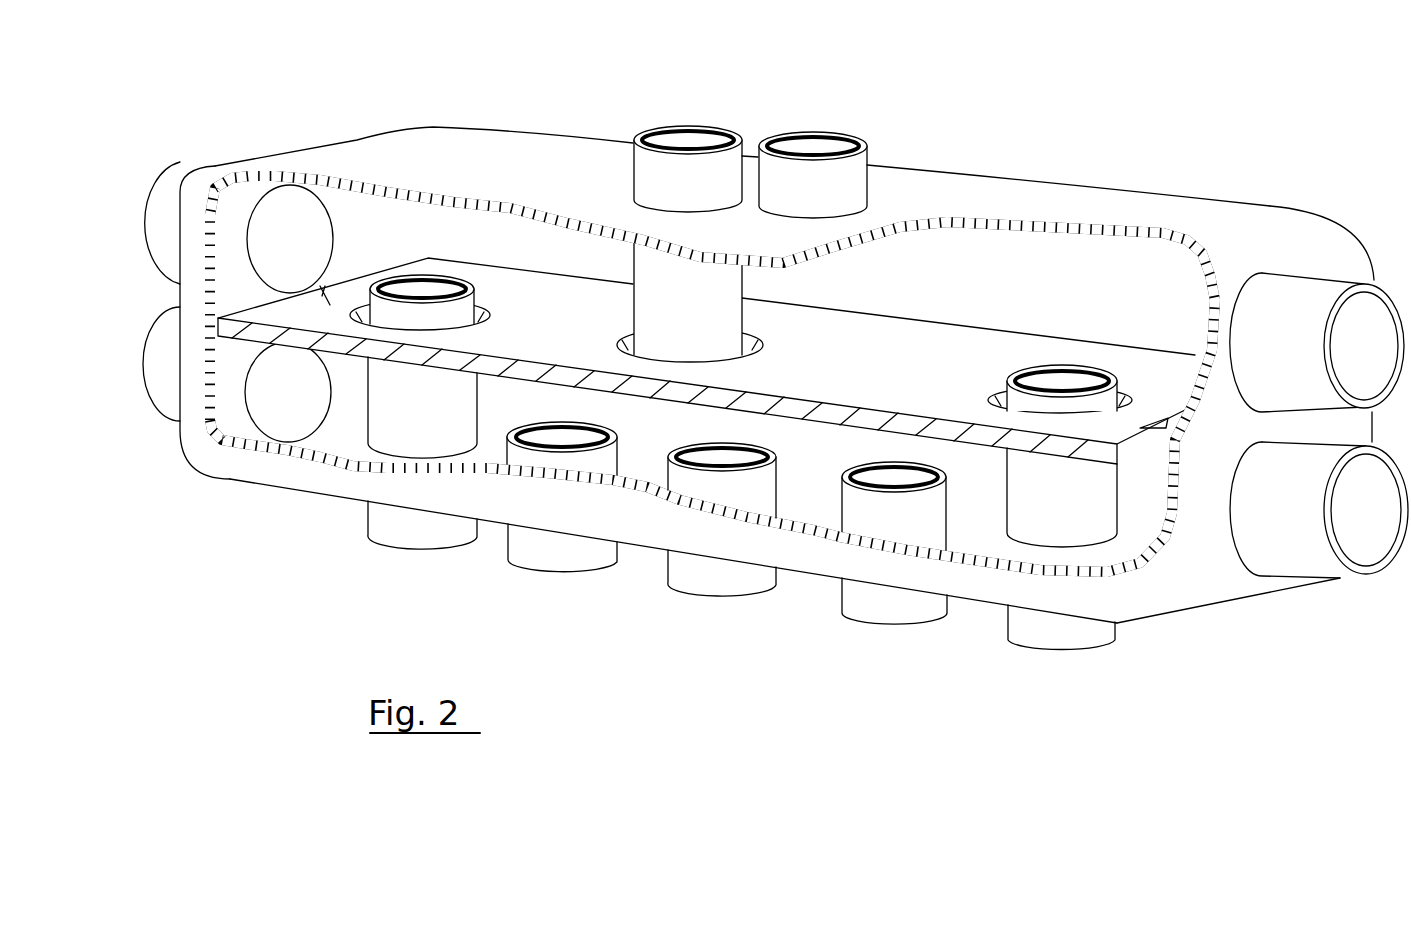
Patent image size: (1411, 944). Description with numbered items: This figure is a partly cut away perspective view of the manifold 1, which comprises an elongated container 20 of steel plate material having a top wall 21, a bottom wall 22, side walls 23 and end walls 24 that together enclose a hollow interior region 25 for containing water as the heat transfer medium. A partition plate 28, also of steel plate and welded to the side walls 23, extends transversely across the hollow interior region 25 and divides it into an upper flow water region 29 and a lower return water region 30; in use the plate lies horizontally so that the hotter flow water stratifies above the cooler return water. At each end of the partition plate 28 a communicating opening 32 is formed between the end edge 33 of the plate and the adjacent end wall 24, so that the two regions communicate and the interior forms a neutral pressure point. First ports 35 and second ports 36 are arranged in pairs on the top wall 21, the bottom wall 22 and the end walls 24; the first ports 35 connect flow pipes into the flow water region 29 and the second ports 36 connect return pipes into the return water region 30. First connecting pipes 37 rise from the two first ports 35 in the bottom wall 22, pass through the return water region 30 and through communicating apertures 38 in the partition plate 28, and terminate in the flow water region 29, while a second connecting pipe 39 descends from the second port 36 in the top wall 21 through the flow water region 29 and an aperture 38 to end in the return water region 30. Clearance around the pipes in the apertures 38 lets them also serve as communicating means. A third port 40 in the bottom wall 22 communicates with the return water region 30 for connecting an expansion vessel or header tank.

The manifold 1 is at (338, 93).
The elongated container 20 is at (747, 381).
The top wall 21 is at (487, 138).
The bottom wall 22 is at (1142, 623).
The side walls 23 is at (1067, 265).
The end walls 24 is at (273, 156).
The hollow interior region 25 is at (647, 430).
The partition plate 28 is at (888, 373).
The flow water region 29 is at (553, 330).
The return water region 30 is at (812, 487).
The communicating openings 32 is at (337, 280).
The end edges 33 is at (523, 267).
The first ports 35 is at (163, 193).
The second ports 36 is at (677, 124).
The first connecting pipes 37 is at (397, 418).
The communicating apertures 38 is at (493, 302).
The second connecting pipe 39 is at (710, 288).
The third port 40 is at (693, 598).